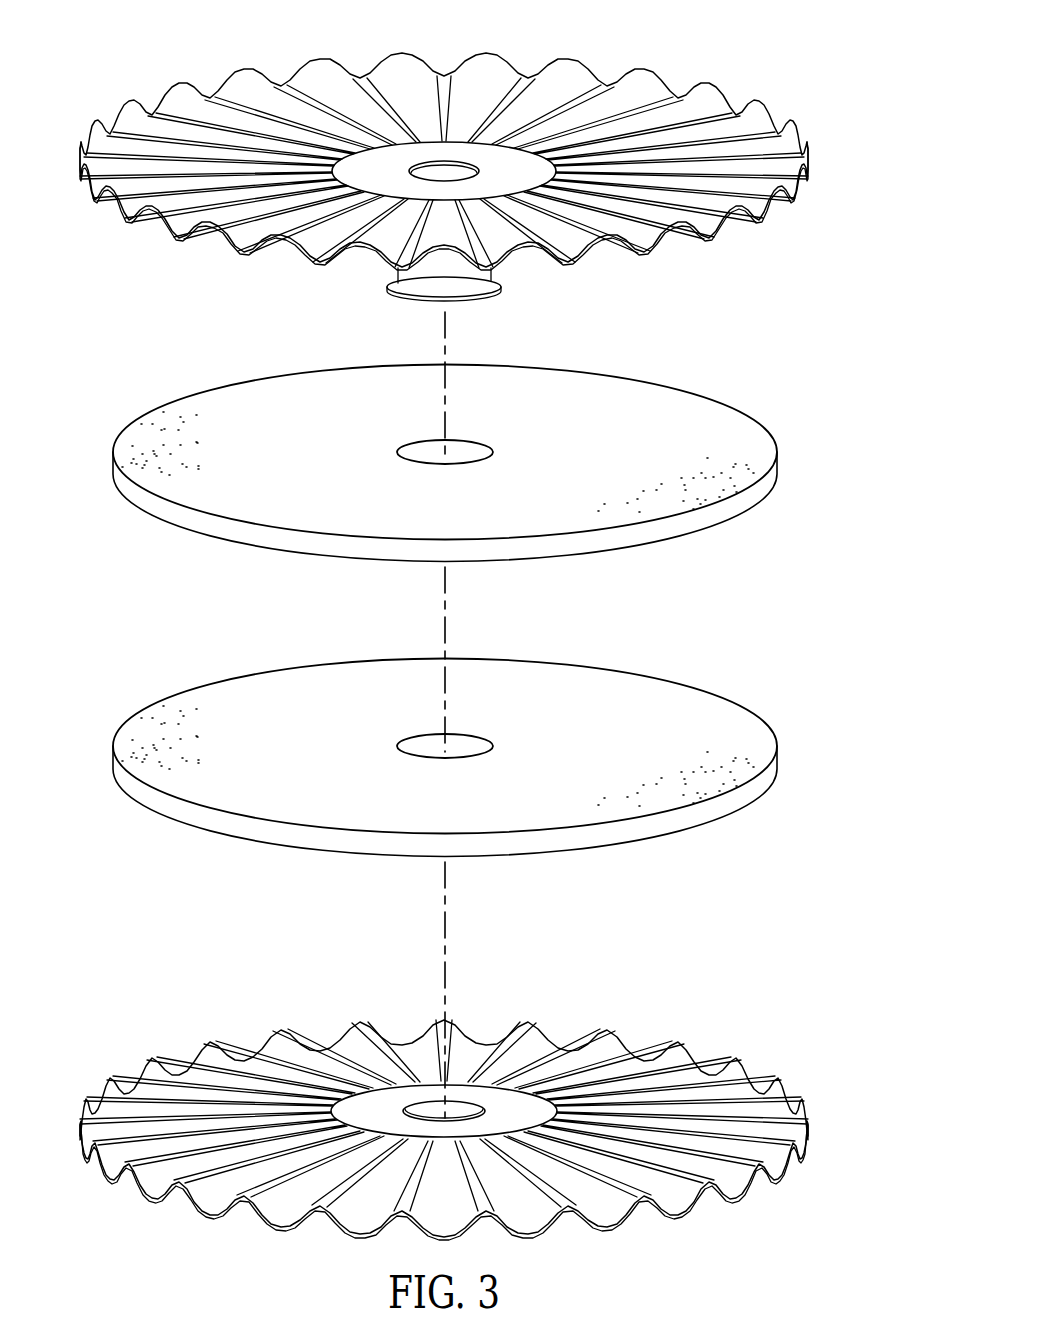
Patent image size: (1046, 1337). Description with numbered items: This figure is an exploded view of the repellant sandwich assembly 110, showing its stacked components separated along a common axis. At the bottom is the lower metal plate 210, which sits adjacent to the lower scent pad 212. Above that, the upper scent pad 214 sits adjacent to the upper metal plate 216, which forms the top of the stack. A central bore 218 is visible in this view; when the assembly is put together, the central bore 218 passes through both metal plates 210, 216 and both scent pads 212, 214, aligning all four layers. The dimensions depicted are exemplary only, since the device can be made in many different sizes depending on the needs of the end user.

The filter assembly 110 is at (675, 52).
The lower metal plate 210 is at (680, 1213).
The lower scent pad 212 is at (647, 692).
The upper scent pad 214 is at (647, 397).
The upper metal plate 216 is at (243, 68).
The central bore 218 is at (388, 270).